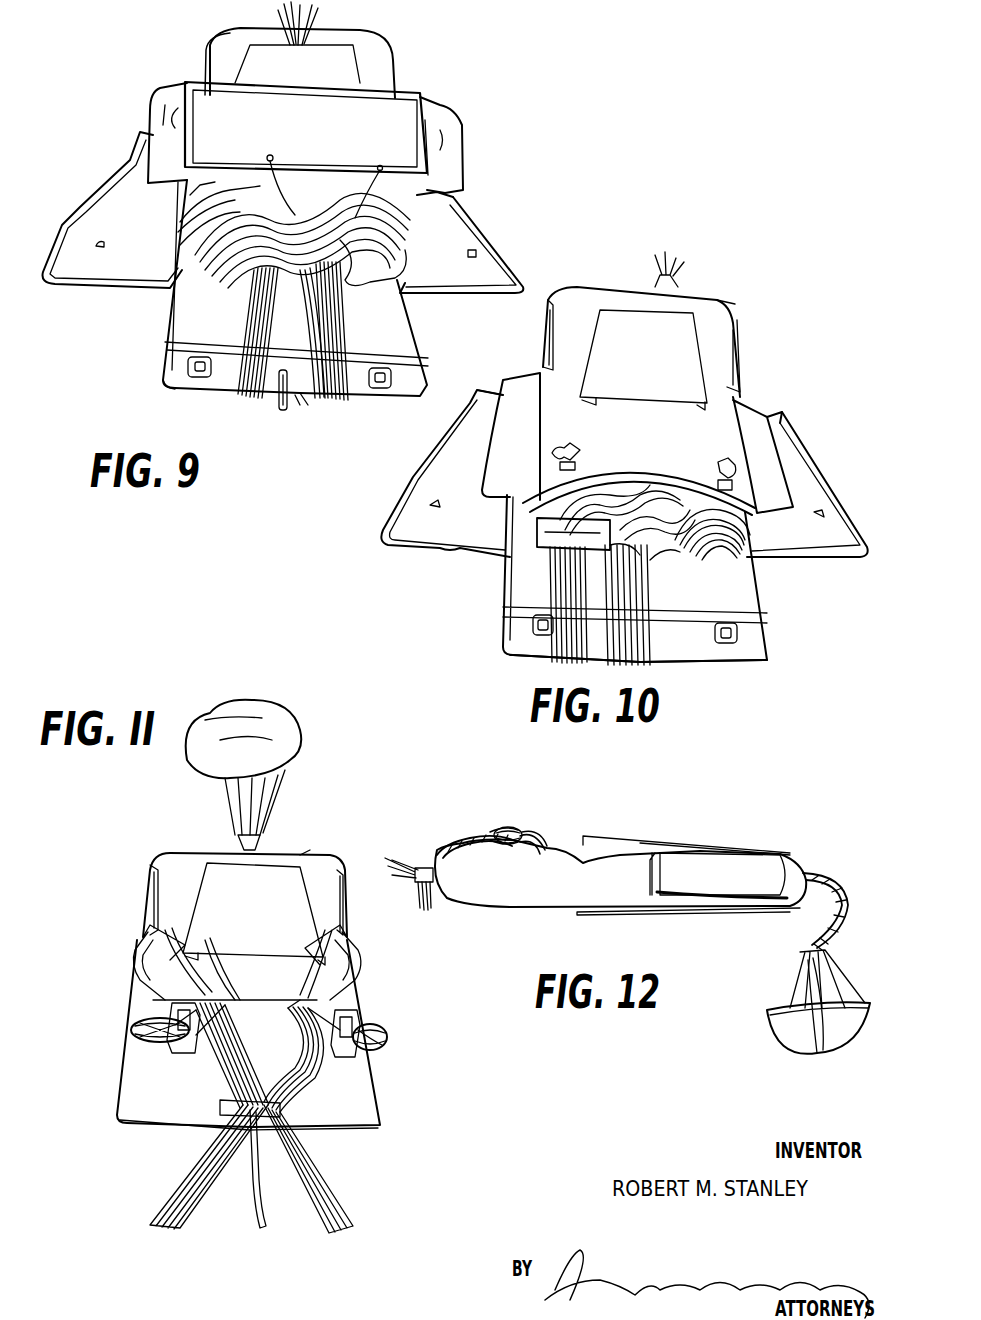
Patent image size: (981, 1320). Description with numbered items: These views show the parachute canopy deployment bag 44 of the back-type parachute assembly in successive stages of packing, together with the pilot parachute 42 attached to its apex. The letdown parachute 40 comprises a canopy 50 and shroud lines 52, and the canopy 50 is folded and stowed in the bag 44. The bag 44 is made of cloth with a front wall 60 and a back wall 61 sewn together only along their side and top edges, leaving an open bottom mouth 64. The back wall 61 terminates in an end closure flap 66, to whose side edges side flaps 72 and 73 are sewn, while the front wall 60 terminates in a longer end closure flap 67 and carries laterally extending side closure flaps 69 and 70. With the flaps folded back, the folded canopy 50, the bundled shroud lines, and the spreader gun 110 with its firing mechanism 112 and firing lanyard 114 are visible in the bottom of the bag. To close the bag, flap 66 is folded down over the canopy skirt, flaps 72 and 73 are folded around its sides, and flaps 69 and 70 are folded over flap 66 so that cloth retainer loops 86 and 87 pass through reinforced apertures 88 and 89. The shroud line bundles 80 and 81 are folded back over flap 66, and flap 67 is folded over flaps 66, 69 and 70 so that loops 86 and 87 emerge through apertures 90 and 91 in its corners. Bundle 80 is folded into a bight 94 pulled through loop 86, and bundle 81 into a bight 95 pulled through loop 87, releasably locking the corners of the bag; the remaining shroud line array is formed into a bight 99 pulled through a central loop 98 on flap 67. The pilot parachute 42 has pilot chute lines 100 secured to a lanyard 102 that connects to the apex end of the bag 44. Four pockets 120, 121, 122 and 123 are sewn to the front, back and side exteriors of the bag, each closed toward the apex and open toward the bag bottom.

In FIG. 9, the letdown parachute 40 is at (455, 197).
In FIG. 9, the pilot parachute 42 is at (290, 18).
In FIG. 10, the pilot parachute 42 is at (668, 272).
In FIG. 11, the pilot parachute 42 is at (285, 760).
In FIG. 12, the pilot parachute 42 is at (790, 1042).
In FIG. 9, the parachute canopy deployment bag 44 is at (205, 32).
In FIG. 10, the parachute canopy deployment bag 44 is at (726, 295).
In FIG. 11, the parachute canopy deployment bag 44 is at (302, 848).
In FIG. 12, the parachute canopy deployment bag 44 is at (682, 910).
In FIG. 9, the canopy 50 is at (239, 210).
In FIG. 10, the canopy 50 is at (580, 490).
In FIG. 9, the shroud lines 52 is at (302, 405).
In FIG. 9, the front wall 60 is at (370, 282).
In FIG. 12, the front wall 60 is at (783, 905).
In FIG. 9, the back wall 61 is at (380, 58).
In FIG. 10, the back wall 61 is at (615, 285).
In FIG. 11, the back wall 61 is at (178, 847).
In FIG. 10, the open bottom mouth 64 is at (665, 485).
In FIG. 9, the end closure flap 66 is at (314, 135).
In FIG. 10, the end closure flap 66 is at (698, 548).
In FIG. 9, the end closure flap 67 is at (163, 360).
In FIG. 10, the end closure flap 67 is at (697, 650).
In FIG. 11, the end closure flap 67 is at (365, 1092).
In FIG. 12, the end closure flap 67 is at (450, 845).
In FIG. 9, the side closure flap 69 is at (68, 242).
In FIG. 10, the side closure flap 69 is at (405, 505).
In FIG. 11, the side closure flap 69 is at (178, 948).
In FIG. 9, the side closure flap 70 is at (498, 238).
In FIG. 10, the side closure flap 70 is at (835, 496).
In FIG. 11, the side closure flap 70 is at (325, 958).
In FIG. 12, the side closure flap 70 is at (590, 850).
In FIG. 9, the side flap 72 is at (165, 100).
In FIG. 10, the side flap 72 is at (500, 390).
In FIG. 9, the side flap 73 is at (452, 115).
In FIG. 10, the side flap 73 is at (758, 410).
In FIG. 9, the shroud line bundle 80 is at (268, 345).
In FIG. 10, the shroud line bundle 80 is at (565, 664).
In FIG. 11, the shroud line bundle 80 is at (213, 1005).
In FIG. 9, the shroud line bundle 81 is at (332, 316).
In FIG. 10, the shroud line bundle 81 is at (638, 665).
In FIG. 11, the shroud line bundle 81 is at (305, 1003).
In FIG. 12, the shroud line bundle 81 is at (543, 842).
In FIG. 10, the cloth retainer loop 86 is at (580, 448).
In FIG. 11, the cloth retainer loop 86 is at (170, 1017).
In FIG. 10, the cloth retainer loop 87 is at (720, 458).
In FIG. 11, the cloth retainer loop 87 is at (356, 1020).
In FIG. 12, the cloth retainer loop 87 is at (505, 828).
In FIG. 9, the reinforced aperture 88 is at (103, 248).
In FIG. 10, the reinforced aperture 88 is at (440, 500).
In FIG. 9, the reinforced aperture 89 is at (477, 254).
In FIG. 10, the reinforced aperture 89 is at (820, 515).
In FIG. 9, the reinforced aperture 90 is at (196, 377).
In FIG. 10, the reinforced aperture 90 is at (533, 624).
In FIG. 9, the reinforced aperture 91 is at (380, 388).
In FIG. 10, the reinforced aperture 91 is at (740, 632).
In FIG. 11, the bight 94 is at (130, 1035).
In FIG. 11, the bight 95 is at (386, 1043).
In FIG. 12, the bight 95 is at (510, 830).
In FIG. 12, the cloth retainer loop 98 is at (418, 885).
In FIG. 12, the bight 99 is at (427, 912).
In FIG. 12, the pilot chute lines 100 is at (810, 980).
In FIG. 12, the lanyard 102 is at (832, 876).
In FIG. 9, the ballistic parachute canopy spreader gun 110 is at (285, 278).
In FIG. 9, the firing mechanism 112 is at (330, 333).
In FIG. 10, the firing mechanism 112 is at (540, 545).
In FIG. 9, the firing lanyard 114 is at (278, 408).
In FIG. 12, the pocket 120 is at (595, 918).
In FIG. 9, the pocket 121 is at (305, 47).
In FIG. 10, the pocket 121 is at (651, 348).
In FIG. 11, the pocket 121 is at (262, 903).
In FIG. 12, the pocket 121 is at (682, 843).
In FIG. 10, the pocket 122 is at (547, 347).
In FIG. 11, the pocket 122 is at (145, 908).
In FIG. 10, the pocket 123 is at (740, 360).
In FIG. 11, the pocket 123 is at (345, 912).
In FIG. 12, the pocket 123 is at (730, 855).